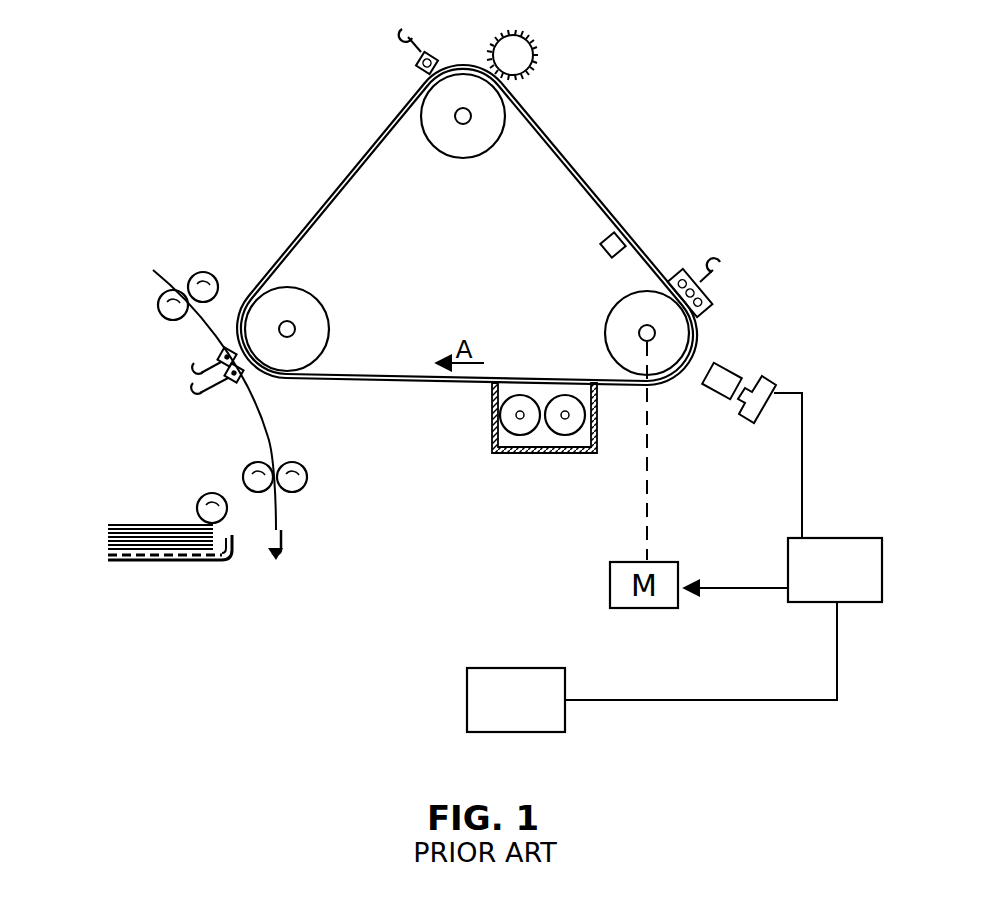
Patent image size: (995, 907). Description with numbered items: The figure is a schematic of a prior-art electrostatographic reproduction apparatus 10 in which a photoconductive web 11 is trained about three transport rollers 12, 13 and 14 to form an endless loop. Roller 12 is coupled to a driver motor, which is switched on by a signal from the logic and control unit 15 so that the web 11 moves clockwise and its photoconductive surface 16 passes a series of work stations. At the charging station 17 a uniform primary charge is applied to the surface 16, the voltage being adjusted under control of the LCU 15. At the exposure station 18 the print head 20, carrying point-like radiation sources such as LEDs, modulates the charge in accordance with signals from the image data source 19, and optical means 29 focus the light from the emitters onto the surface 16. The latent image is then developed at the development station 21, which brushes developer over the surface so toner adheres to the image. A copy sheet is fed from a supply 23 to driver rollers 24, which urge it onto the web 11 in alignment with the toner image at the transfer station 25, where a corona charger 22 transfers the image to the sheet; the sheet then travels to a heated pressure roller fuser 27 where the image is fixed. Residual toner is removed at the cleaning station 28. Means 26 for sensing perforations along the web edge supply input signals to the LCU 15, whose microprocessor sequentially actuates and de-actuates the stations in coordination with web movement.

The electrostatographic reproduction apparatus 10 is at (326, 181).
The photoconductive web 11 is at (294, 240).
The transport roller 12 is at (605, 334).
The transport roller 13 is at (478, 157).
The transport roller 14 is at (323, 303).
The logic and control unit 15 is at (790, 602).
The photoconductive surface 16 is at (598, 198).
The charging station 17 is at (714, 303).
The exposure station 18 is at (744, 386).
The image data source 19 is at (467, 702).
The print head 20 is at (745, 416).
The development station 21 is at (512, 462).
The corona charger 22 is at (180, 405).
The supply 23 is at (205, 561).
The driver rollers 24 is at (253, 465).
The transfer station 25 is at (152, 472).
The means for sensing web perforations 26 is at (603, 252).
The heated pressure roller fuser 27 is at (156, 320).
The cleaning station 28 is at (536, 60).
The optical means 29 is at (712, 390).